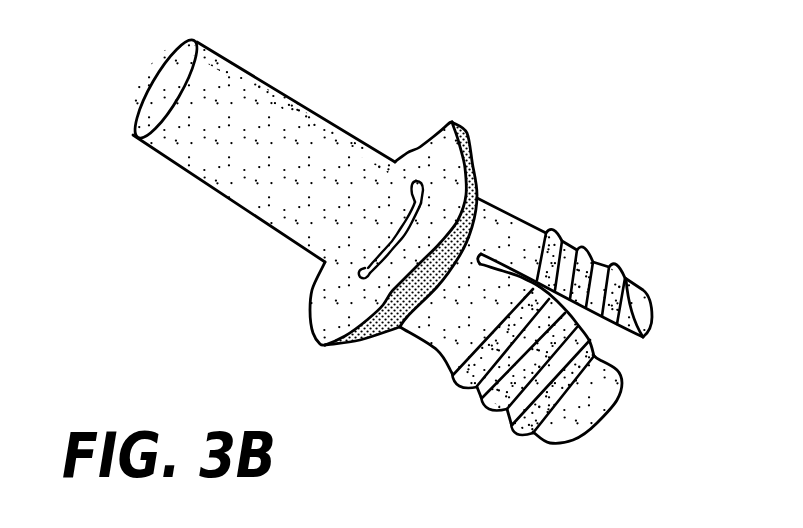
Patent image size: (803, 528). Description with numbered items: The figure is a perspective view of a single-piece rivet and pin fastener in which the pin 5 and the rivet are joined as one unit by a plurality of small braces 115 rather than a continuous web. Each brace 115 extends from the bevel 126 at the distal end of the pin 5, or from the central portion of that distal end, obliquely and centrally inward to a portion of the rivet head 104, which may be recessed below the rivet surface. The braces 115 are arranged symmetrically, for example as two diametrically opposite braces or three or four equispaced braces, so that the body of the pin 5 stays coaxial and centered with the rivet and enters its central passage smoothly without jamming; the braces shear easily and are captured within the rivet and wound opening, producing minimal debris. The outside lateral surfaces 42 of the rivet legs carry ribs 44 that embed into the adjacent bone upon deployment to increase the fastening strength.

The pin 5 is at (295, 99).
The rivet head 104 is at (480, 172).
The bevel 126 is at (400, 213).
The braces 115 is at (411, 178).
The outside lateral surfaces 42 is at (428, 348).
The ribs 44 is at (514, 427).